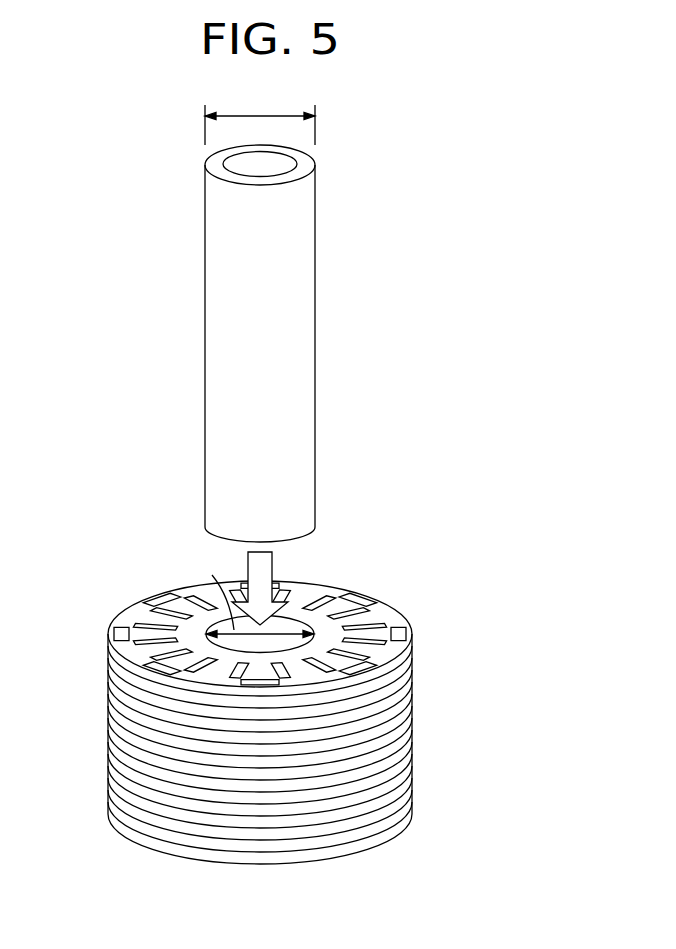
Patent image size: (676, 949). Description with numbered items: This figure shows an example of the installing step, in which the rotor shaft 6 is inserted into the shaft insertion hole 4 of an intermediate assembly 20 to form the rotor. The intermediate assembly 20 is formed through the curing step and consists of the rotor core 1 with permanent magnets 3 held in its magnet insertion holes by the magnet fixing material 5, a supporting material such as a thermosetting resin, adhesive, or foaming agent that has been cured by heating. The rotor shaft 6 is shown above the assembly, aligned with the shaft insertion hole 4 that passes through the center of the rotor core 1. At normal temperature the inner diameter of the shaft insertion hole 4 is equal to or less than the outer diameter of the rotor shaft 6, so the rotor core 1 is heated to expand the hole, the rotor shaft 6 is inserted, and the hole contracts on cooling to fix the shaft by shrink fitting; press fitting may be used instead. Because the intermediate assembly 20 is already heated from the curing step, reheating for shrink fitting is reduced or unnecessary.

The rotor core 1 is at (131, 612).
The permanent magnet 3 is at (378, 625).
The shaft insertion hole 4 is at (288, 624).
The magnet fixing material 5 is at (332, 594).
The rotor shaft 6 is at (303, 350).
The intermediate assembly 20 is at (452, 556).